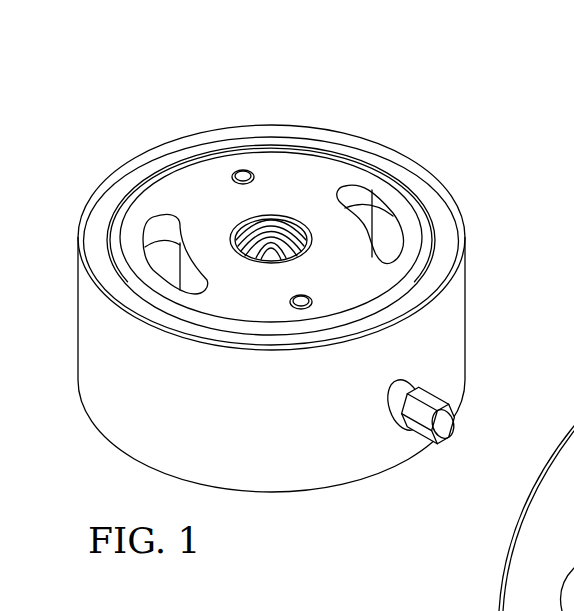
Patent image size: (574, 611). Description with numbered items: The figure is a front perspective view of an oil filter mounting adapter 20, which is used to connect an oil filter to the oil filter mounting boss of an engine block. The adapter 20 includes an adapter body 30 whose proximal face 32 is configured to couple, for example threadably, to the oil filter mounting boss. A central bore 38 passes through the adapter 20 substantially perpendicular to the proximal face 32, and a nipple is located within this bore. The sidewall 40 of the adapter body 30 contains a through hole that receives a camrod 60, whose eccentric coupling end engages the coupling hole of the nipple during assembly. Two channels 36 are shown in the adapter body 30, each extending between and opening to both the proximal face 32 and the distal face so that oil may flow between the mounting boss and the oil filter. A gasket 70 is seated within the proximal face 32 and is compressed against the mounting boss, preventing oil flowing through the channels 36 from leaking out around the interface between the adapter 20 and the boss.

The oil filter mounting adapter 20 is at (128, 83).
The adapter body 30 is at (488, 287).
The proximal face 32 is at (250, 120).
The channels 36 is at (165, 240).
The central bore 38 is at (291, 208).
The sidewall 40 is at (88, 318).
The camrod 60 is at (468, 407).
The gasket 70 is at (441, 216).